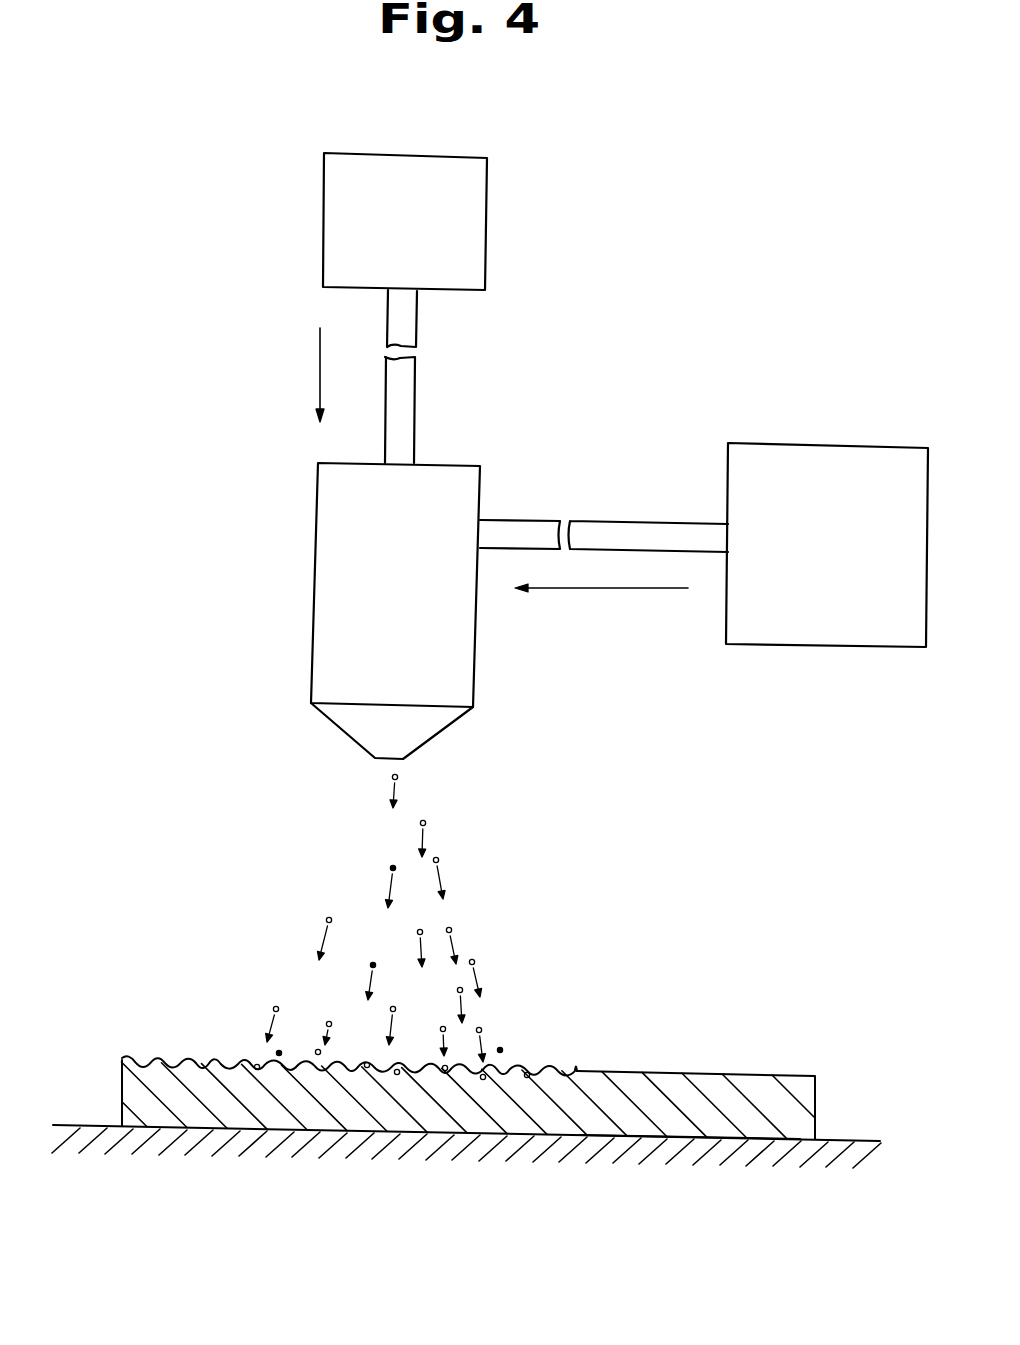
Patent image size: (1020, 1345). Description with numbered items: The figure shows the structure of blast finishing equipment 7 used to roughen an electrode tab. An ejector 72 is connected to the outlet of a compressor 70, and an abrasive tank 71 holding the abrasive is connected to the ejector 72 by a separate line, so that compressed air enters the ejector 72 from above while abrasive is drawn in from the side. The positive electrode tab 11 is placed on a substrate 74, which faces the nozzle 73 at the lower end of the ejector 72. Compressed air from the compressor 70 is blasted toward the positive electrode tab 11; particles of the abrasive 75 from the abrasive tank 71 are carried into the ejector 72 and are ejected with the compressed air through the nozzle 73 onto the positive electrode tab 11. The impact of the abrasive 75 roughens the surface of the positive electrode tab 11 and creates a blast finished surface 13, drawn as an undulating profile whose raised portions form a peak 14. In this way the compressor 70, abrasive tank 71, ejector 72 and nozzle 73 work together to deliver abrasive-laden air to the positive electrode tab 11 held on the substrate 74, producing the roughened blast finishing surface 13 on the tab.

The blast finishing equipment 7 is at (697, 282).
The compressor 70 is at (487, 233).
The abrasive tank 71 is at (825, 443).
The ejector 72 is at (312, 593).
The nozzle 73 is at (403, 759).
The abrasive 75 is at (423, 823).
The positive electrode tab 11 is at (122, 1090).
The blast finishing surface 13 is at (158, 1058).
The peak 14 is at (678, 1140).
The substrate 74 is at (832, 1138).